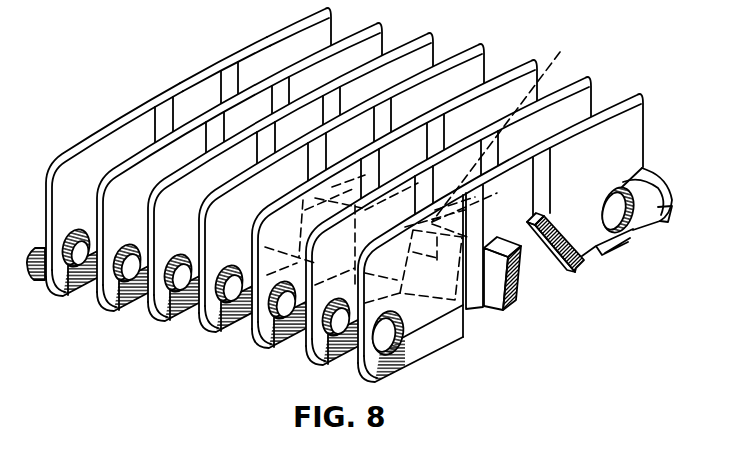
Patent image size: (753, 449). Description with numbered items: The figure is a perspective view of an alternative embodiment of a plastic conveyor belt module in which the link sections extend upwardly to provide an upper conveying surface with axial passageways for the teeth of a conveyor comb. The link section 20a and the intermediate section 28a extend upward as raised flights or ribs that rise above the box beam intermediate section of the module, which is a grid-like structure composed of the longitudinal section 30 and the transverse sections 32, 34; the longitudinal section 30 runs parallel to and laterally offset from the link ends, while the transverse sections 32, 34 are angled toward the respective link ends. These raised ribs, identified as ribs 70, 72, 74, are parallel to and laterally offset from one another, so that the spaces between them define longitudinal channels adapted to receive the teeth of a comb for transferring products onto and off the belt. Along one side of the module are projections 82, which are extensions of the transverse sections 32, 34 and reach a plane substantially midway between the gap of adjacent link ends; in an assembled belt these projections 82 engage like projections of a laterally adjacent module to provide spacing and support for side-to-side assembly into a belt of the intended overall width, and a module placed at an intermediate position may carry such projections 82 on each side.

The raised rib 70 is at (95, 128).
The raised rib 72 is at (193, 73).
The raised rib 74 is at (273, 30).
The longitudinal section 30 is at (427, 168).
The transverse section 34 is at (530, 170).
The transverse section 32 is at (431, 265).
The projection 82 is at (583, 267).
The intermediate section 28a is at (521, 266).
The link section 20a is at (419, 307).